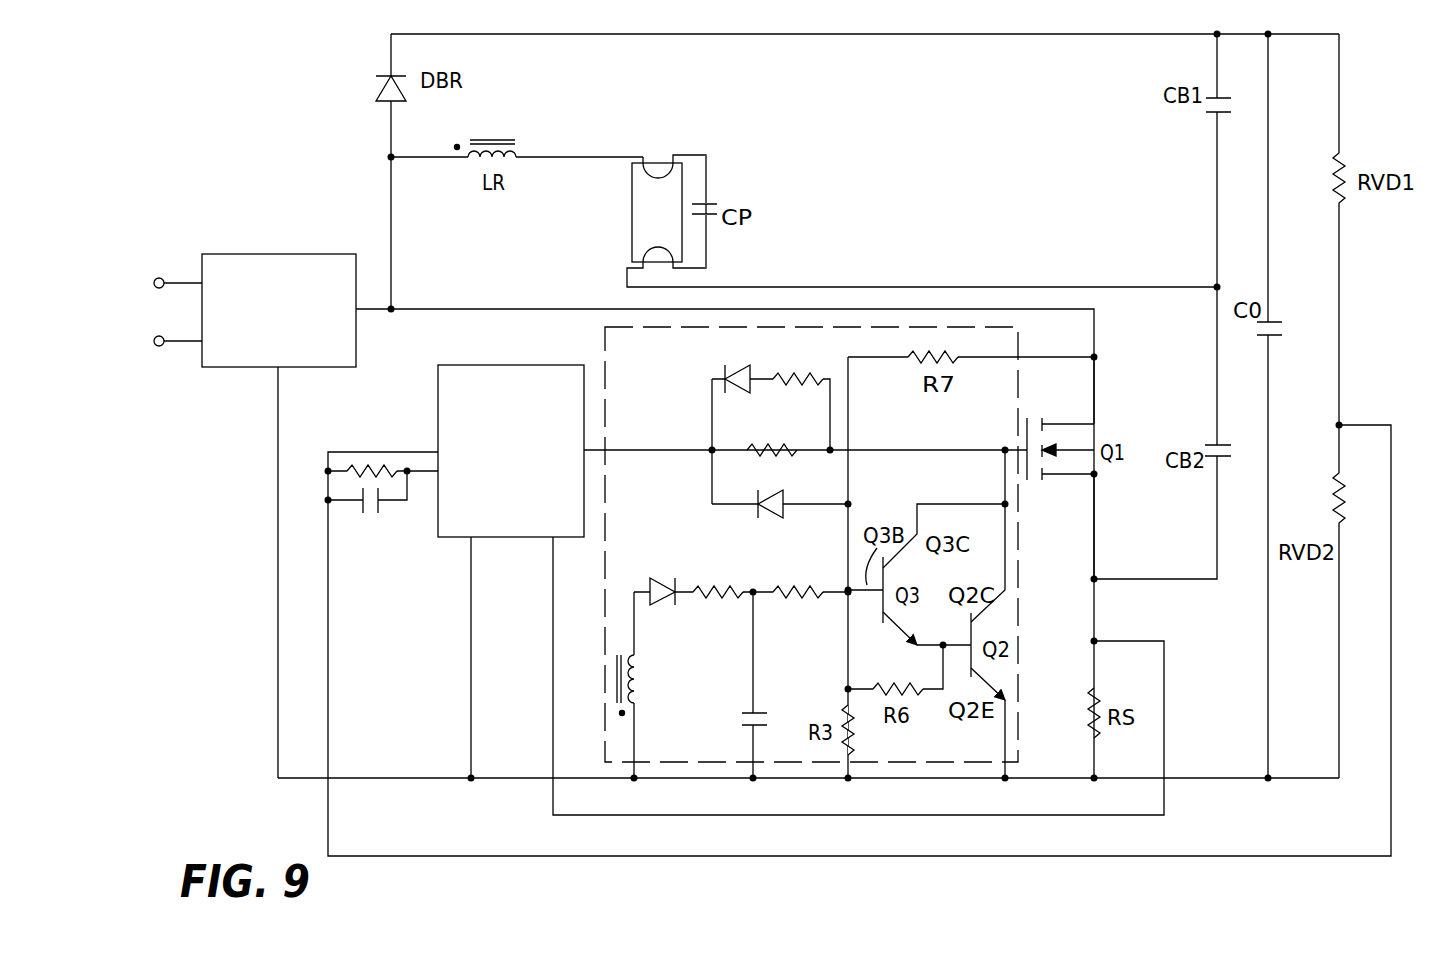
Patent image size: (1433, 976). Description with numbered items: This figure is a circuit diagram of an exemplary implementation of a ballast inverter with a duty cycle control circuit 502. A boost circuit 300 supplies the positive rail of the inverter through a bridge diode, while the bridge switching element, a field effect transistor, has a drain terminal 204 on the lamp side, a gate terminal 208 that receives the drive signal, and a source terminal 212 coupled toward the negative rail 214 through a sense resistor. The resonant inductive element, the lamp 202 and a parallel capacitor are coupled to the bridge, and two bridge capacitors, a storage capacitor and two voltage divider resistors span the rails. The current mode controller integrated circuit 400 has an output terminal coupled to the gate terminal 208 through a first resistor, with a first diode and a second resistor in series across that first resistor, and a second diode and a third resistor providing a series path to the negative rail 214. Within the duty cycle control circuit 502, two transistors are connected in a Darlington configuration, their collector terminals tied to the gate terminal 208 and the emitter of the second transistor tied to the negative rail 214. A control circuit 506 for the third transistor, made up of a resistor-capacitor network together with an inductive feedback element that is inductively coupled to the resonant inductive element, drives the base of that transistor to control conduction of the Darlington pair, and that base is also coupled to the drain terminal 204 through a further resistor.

The lamp 202 is at (673, 228).
The boost circuit 300 is at (337, 253).
The integrated circuit 400 is at (505, 364).
The duty cycle control circuit 502 is at (668, 384).
The Q3 control circuit 506 is at (725, 649).
The drain terminal 204 is at (1094, 396).
The gate terminal 208 is at (1011, 442).
The source terminal 212 is at (1094, 528).
The negative rail 214 is at (668, 780).